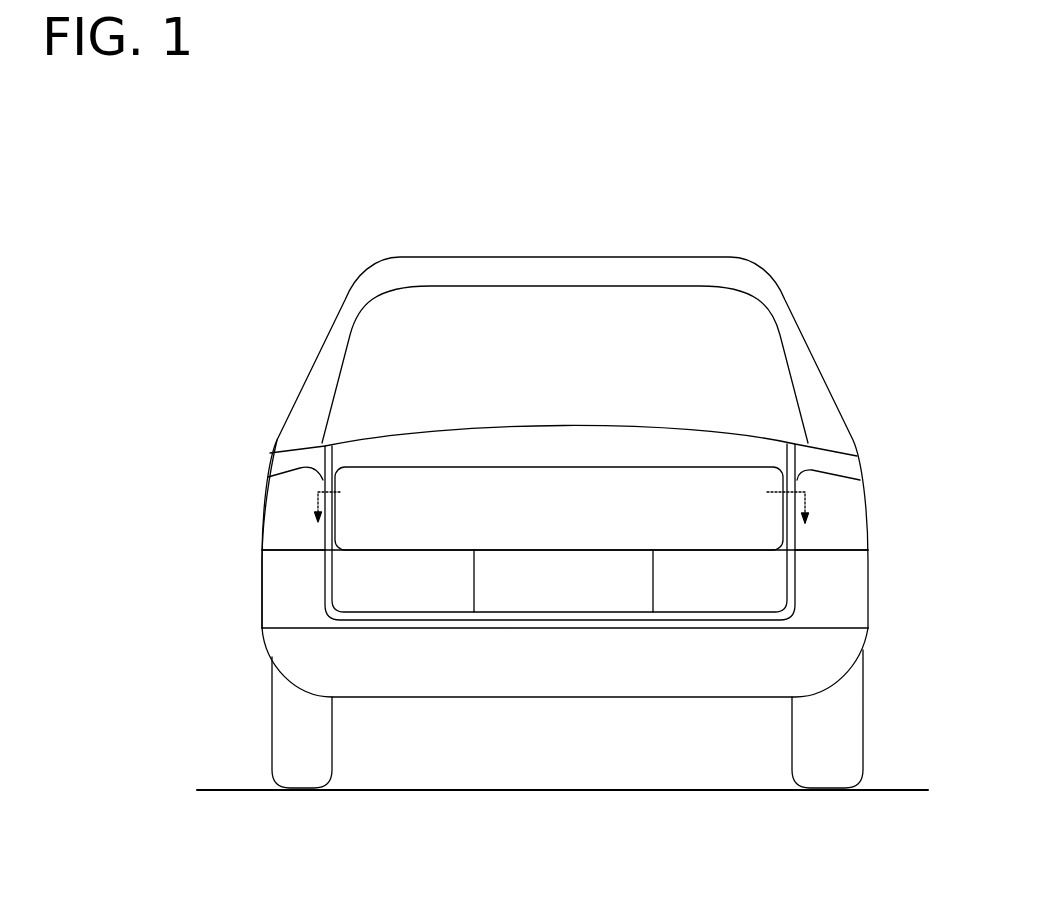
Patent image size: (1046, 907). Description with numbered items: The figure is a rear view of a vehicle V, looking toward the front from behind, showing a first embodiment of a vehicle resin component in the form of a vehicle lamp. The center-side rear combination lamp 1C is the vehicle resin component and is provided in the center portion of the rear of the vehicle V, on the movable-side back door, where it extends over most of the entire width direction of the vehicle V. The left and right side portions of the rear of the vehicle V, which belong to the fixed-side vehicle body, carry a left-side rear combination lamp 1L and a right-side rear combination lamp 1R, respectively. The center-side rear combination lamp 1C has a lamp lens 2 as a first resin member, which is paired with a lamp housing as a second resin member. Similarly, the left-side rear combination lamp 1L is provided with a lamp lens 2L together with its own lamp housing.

The vehicle V is at (557, 258).
The center-side rear combination lamp 1C is at (522, 467).
The left-side rear combination lamp 1L is at (267, 493).
The right-side rear combination lamp 1R is at (867, 498).
The lamp lens 2 is at (582, 485).
The lamp lens 2L is at (260, 532).